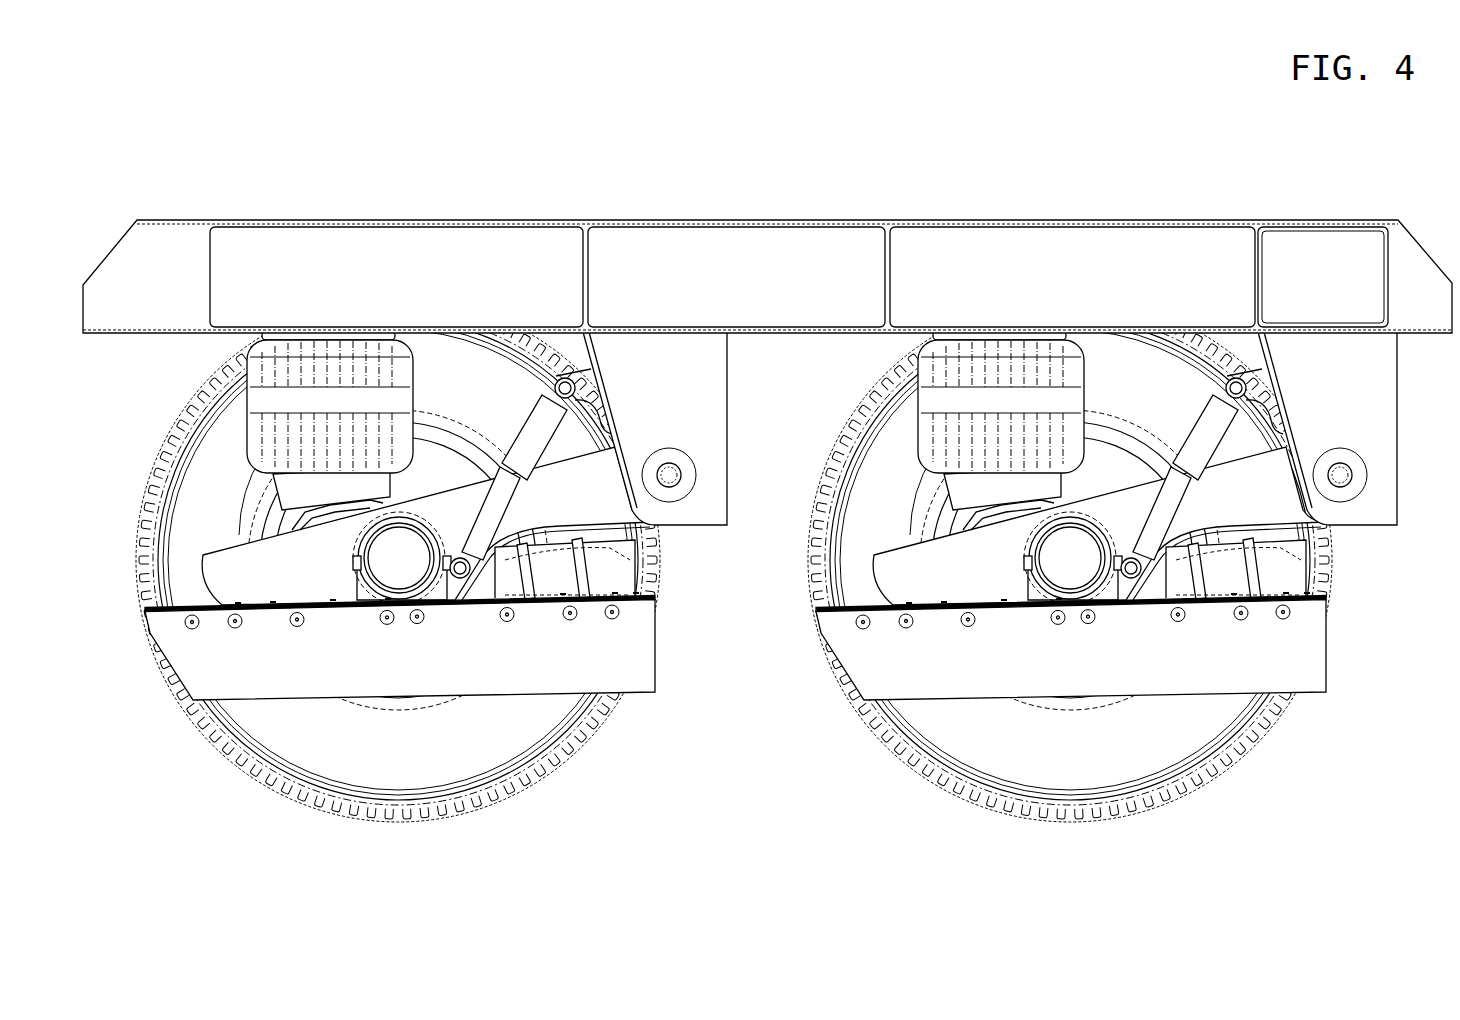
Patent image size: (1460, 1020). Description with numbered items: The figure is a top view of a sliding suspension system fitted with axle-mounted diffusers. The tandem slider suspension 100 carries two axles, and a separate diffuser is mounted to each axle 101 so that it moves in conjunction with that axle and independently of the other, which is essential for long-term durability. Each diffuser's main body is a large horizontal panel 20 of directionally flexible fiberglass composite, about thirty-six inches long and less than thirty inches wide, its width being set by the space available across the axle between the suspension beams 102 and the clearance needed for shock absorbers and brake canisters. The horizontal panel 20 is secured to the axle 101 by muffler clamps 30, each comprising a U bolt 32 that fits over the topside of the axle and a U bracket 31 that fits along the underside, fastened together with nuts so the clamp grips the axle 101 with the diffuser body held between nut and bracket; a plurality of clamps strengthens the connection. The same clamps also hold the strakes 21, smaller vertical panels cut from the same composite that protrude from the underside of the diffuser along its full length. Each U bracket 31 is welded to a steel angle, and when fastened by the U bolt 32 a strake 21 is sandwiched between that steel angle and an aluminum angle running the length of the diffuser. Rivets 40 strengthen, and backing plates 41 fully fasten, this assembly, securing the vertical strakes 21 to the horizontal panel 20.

The horizontal panel 20 is at (655, 597).
The strakes 21 is at (644, 672).
The muffler clamps 30 is at (1098, 526).
The U bracket 31 is at (360, 583).
The U bolt 32 is at (436, 532).
The rivets 40 is at (570, 620).
The backing plates 41 is at (612, 619).
The tandem slider suspension 100 is at (1340, 456).
The axle 101 is at (1073, 558).
The suspension beams 102 is at (1314, 428).